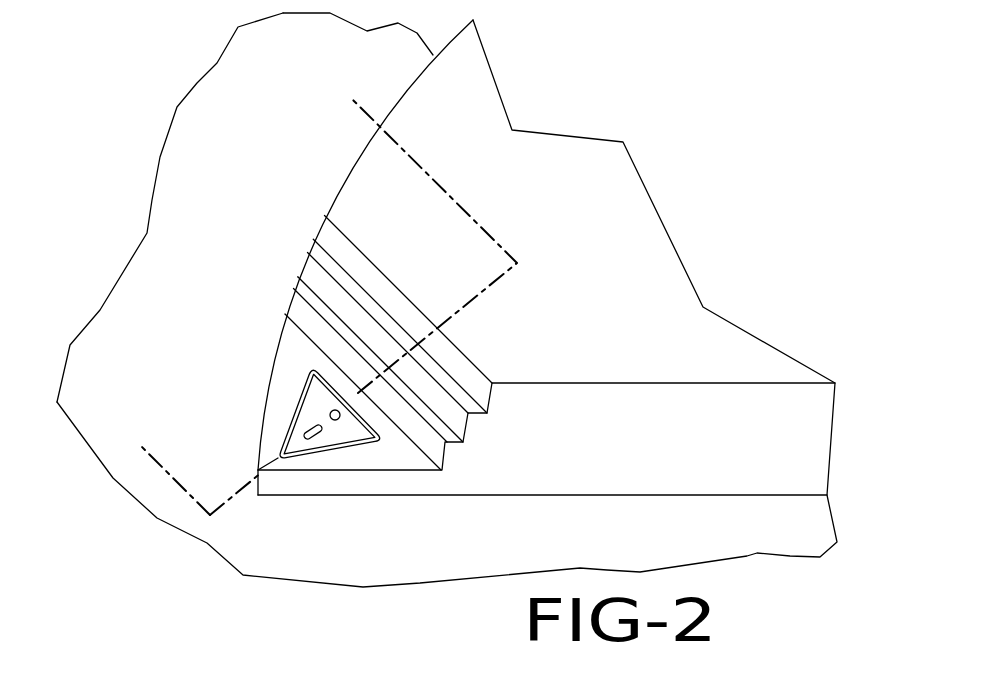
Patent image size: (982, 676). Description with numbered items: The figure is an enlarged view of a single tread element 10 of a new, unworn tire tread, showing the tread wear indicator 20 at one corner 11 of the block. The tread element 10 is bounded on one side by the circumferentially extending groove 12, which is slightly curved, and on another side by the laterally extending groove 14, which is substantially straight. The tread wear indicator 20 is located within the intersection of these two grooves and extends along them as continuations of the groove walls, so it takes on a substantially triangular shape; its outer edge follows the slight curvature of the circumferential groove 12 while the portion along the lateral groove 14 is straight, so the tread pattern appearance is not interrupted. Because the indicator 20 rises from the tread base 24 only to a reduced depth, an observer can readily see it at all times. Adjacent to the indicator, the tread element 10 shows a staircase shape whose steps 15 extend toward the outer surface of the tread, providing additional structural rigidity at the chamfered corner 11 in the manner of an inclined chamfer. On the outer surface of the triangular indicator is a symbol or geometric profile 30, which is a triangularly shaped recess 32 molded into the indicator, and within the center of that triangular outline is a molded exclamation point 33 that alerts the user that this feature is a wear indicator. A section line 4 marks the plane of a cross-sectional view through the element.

The section line 4- 4 is at (317, 294).
The tread element 10 is at (637, 262).
The corner 11 is at (468, 358).
The circumferentially extending groove 12 is at (243, 172).
The laterally extending groove 14 is at (492, 520).
The steps 15 is at (313, 272).
The tread wear indicator 20 is at (288, 436).
The tread base 24 is at (170, 385).
The symbol or geometric profile 30 is at (310, 407).
The triangularly shaped recess 32 is at (303, 437).
The exclamation point 33 is at (322, 435).